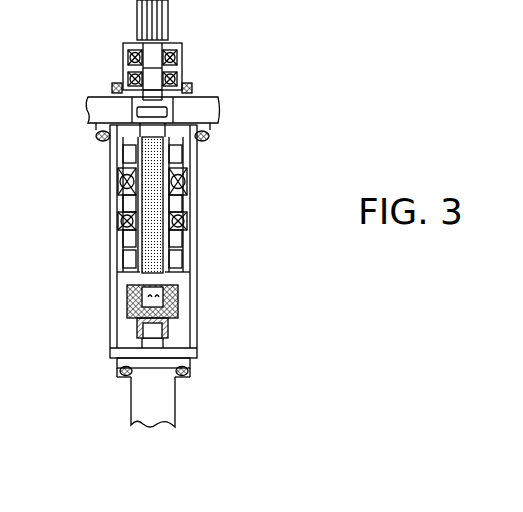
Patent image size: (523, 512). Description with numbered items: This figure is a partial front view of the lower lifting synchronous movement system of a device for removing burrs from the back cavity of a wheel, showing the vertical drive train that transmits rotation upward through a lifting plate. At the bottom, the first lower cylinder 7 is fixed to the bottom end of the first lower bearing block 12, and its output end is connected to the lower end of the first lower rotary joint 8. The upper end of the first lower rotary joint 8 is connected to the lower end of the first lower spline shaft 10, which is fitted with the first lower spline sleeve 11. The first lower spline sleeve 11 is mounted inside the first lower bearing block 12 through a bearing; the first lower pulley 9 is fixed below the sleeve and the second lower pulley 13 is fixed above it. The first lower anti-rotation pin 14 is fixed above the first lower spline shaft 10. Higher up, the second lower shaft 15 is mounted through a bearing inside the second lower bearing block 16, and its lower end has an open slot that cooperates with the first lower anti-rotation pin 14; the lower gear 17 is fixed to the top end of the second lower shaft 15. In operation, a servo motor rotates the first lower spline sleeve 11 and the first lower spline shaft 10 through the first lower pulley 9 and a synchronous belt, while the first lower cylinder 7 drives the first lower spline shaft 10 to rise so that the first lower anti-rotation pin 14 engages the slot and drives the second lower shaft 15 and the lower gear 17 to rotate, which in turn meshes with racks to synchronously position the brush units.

The first lower cylinder 7 is at (153, 381).
The first lower rotary joint 8 is at (128, 307).
The first lower pulley 9 is at (130, 260).
The first lower spline shaft 10 is at (150, 236).
The first lower spline sleeve 11 is at (122, 217).
The first lower bearing block 12 is at (117, 195).
The second lower pulley 13 is at (128, 157).
The first lower anti-rotation pin 14 is at (112, 137).
The second lower shaft 15 is at (108, 98).
The second lower bearing block 16 is at (127, 60).
The lower gear 17 is at (136, 2).